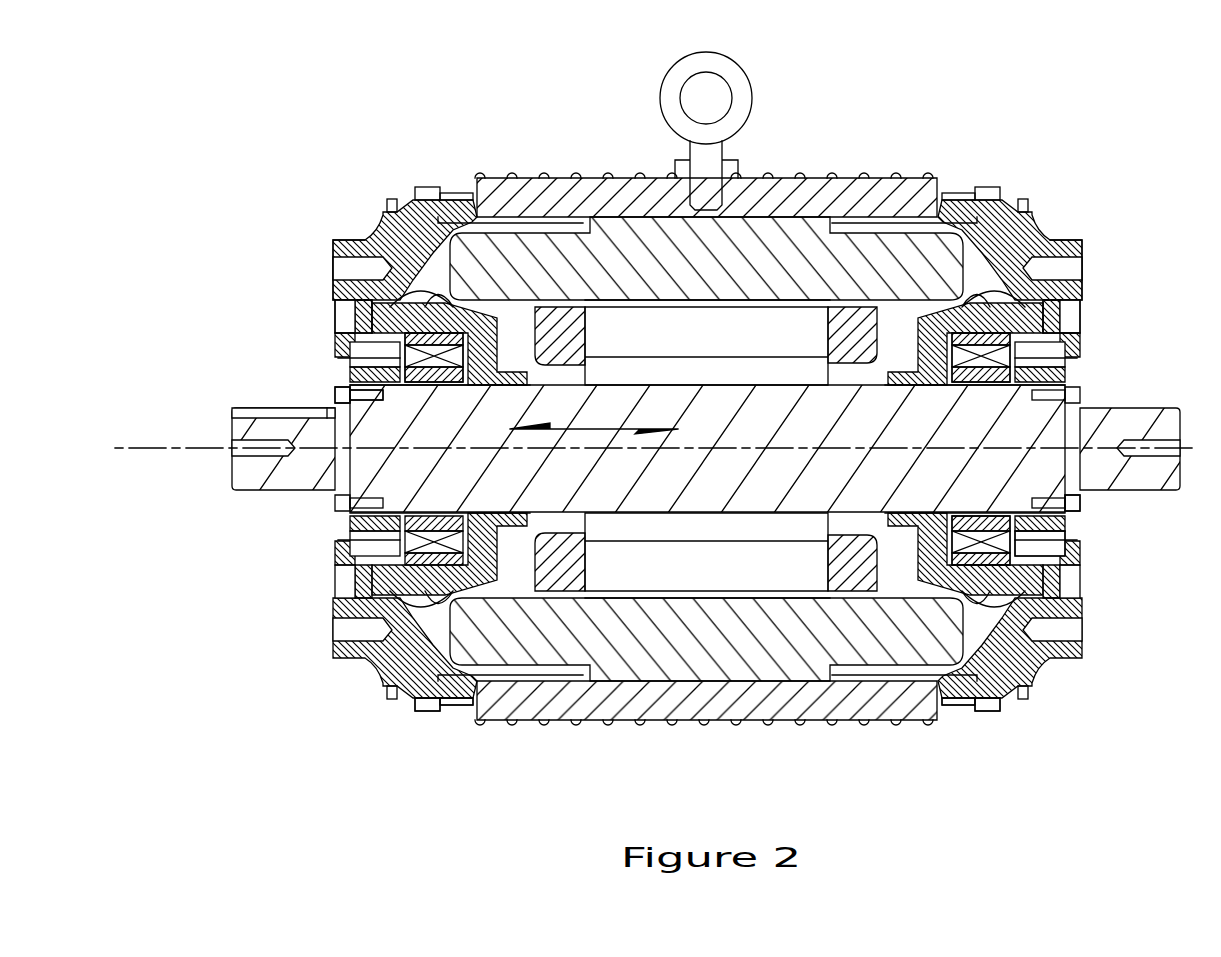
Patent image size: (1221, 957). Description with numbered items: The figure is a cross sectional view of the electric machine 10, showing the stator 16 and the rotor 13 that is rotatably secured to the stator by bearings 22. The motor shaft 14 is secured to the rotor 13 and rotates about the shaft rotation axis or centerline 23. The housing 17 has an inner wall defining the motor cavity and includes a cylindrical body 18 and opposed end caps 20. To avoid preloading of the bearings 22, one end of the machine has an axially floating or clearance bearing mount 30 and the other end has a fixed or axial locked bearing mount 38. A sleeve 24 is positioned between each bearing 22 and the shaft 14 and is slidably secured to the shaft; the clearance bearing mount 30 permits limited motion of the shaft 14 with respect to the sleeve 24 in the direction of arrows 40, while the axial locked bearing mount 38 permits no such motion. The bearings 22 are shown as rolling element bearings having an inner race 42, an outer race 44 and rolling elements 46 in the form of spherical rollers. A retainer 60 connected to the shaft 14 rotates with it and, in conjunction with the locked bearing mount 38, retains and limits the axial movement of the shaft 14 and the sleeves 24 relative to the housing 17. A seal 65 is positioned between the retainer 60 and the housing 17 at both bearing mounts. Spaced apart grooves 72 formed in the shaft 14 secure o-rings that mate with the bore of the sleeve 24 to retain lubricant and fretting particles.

The electric machine 10 is at (1100, 116).
The rotor 13 is at (635, 330).
The motor shaft 14 is at (232, 490).
The stator 16 is at (750, 225).
The housing 17 is at (363, 238).
The cylindrical body 18 is at (515, 178).
The end caps 20 is at (337, 242).
The bearings 22 is at (475, 580).
The shaft rotation axis 23 is at (145, 447).
The sleeve 24 is at (917, 350).
The clearance bearing mount 30 is at (347, 415).
The axial locked bearing mount 38 is at (1123, 408).
The arrows 40 is at (583, 430).
The inner race 42 is at (1080, 487).
The outer race 44 is at (997, 583).
The rolling elements 46 is at (993, 540).
The retainer 60 is at (335, 360).
The seal 65 is at (335, 320).
The grooves 72 is at (388, 392).